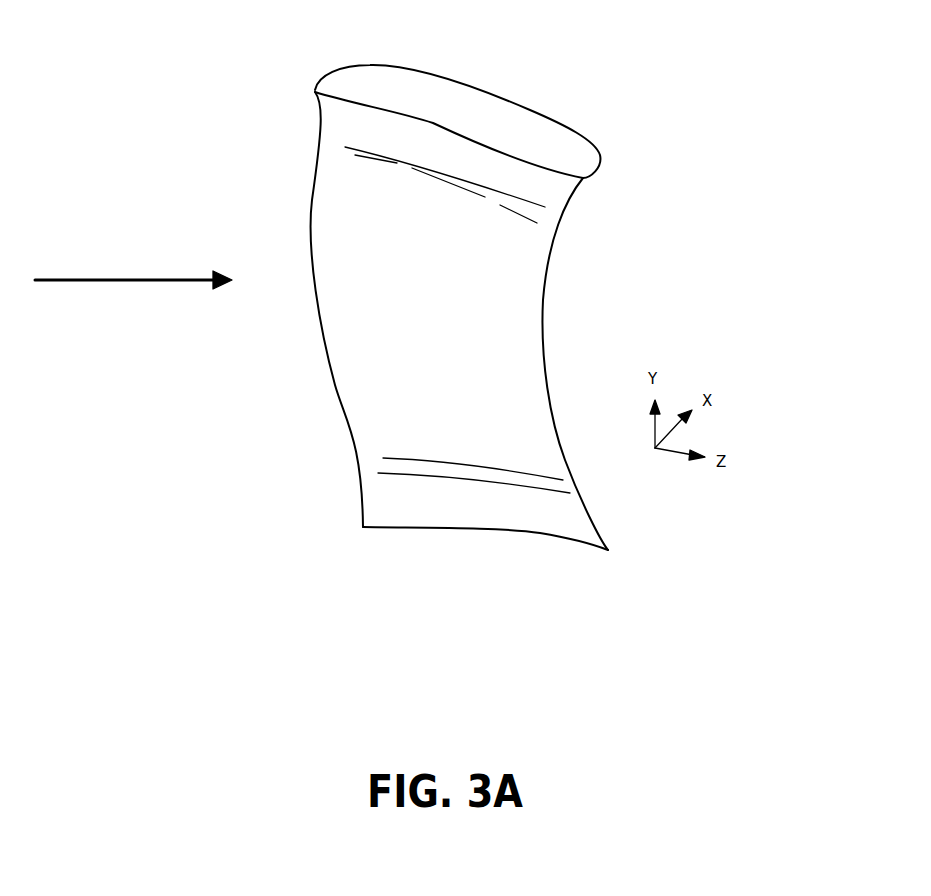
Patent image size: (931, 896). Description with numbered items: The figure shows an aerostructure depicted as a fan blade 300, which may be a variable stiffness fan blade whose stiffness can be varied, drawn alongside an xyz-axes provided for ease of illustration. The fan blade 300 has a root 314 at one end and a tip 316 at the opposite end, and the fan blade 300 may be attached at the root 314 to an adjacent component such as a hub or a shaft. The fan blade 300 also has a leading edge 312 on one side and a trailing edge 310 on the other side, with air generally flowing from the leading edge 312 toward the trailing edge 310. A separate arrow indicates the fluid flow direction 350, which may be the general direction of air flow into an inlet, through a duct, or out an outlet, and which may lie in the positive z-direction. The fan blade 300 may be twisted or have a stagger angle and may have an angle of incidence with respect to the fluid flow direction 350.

The fan blade 300 is at (648, 72).
The trailing edge 310 is at (543, 340).
The leading edge 312 is at (335, 385).
The root 314 is at (445, 97).
The tip 316 is at (418, 527).
The fluid flow direction 350 is at (145, 280).